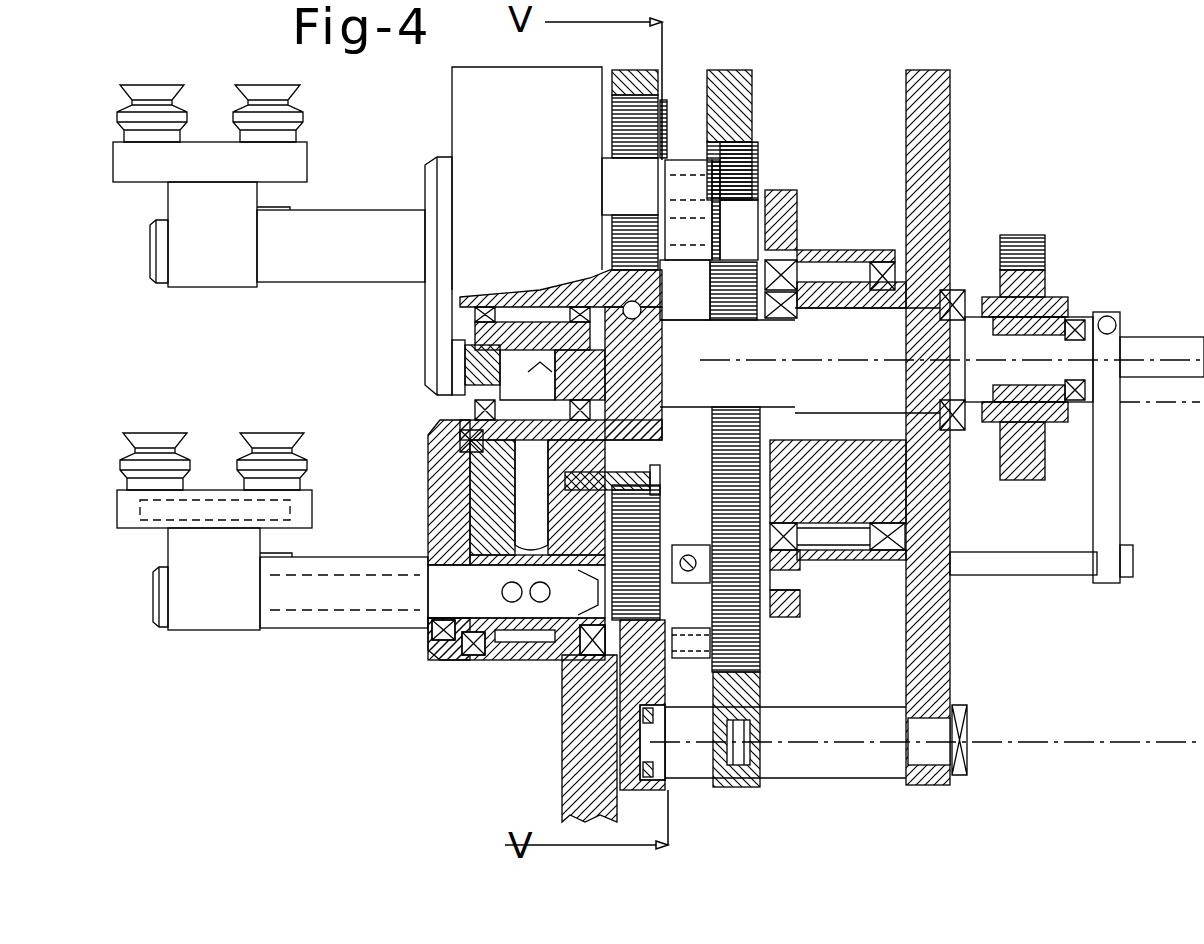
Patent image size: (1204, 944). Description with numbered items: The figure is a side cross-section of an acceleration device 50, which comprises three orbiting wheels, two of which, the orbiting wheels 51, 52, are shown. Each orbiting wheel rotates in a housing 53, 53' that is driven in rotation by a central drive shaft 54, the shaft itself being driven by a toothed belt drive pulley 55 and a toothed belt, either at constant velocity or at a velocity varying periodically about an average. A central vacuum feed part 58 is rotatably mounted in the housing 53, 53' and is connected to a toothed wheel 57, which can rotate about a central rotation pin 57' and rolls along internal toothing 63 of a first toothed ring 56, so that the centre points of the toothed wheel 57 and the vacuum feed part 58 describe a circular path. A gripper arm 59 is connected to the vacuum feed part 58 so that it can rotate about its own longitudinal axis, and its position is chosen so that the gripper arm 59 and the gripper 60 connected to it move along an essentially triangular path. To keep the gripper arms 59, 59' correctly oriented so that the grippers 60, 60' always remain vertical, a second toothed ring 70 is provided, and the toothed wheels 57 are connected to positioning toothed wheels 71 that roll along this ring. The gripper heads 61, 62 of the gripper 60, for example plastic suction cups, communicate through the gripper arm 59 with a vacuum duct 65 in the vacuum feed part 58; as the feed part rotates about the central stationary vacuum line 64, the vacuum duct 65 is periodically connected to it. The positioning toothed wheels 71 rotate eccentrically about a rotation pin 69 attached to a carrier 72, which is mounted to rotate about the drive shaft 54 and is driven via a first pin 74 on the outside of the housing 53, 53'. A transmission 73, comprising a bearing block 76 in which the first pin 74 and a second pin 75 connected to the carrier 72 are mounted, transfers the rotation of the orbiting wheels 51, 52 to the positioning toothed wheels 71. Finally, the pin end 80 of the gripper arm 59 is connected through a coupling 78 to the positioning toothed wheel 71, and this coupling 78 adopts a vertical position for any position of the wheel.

The acceleration device 50 is at (926, 48).
The orbiting wheel 51 is at (413, 132).
The orbiting wheel 52 is at (414, 462).
The housing 53 is at (516, 656).
The housing 53' is at (521, 355).
The central drive shaft 54 is at (1093, 312).
The toothed belt drive pulley 55 is at (1020, 235).
The first toothed ring 56 is at (620, 70).
The toothed wheel 57 is at (634, 474).
The central rotation pin 57' is at (660, 552).
The central vacuum feed part 58 is at (470, 510).
The gripper arm 59 is at (379, 596).
The gripper arm 59' is at (287, 253).
The gripper 60 is at (234, 506).
The gripper 60' is at (231, 133).
The gripper head 61 is at (145, 435).
The gripper head 62 is at (262, 435).
The internal toothing 63 is at (665, 130).
The central stationary vacuum line 64 is at (1045, 430).
The vacuum duct 65 is at (520, 535).
The rotation pin 69 is at (800, 598).
The second toothed ring 70 is at (740, 110).
The positioning toothed wheel 71 is at (762, 640).
The carrier 72 is at (855, 555).
The transmission 73 is at (668, 162).
The first pin 74 is at (758, 192).
The second pin 75 is at (665, 262).
The bearing block 76 is at (755, 165).
The coupling 78 is at (679, 668).
The pin end 80 is at (684, 555).